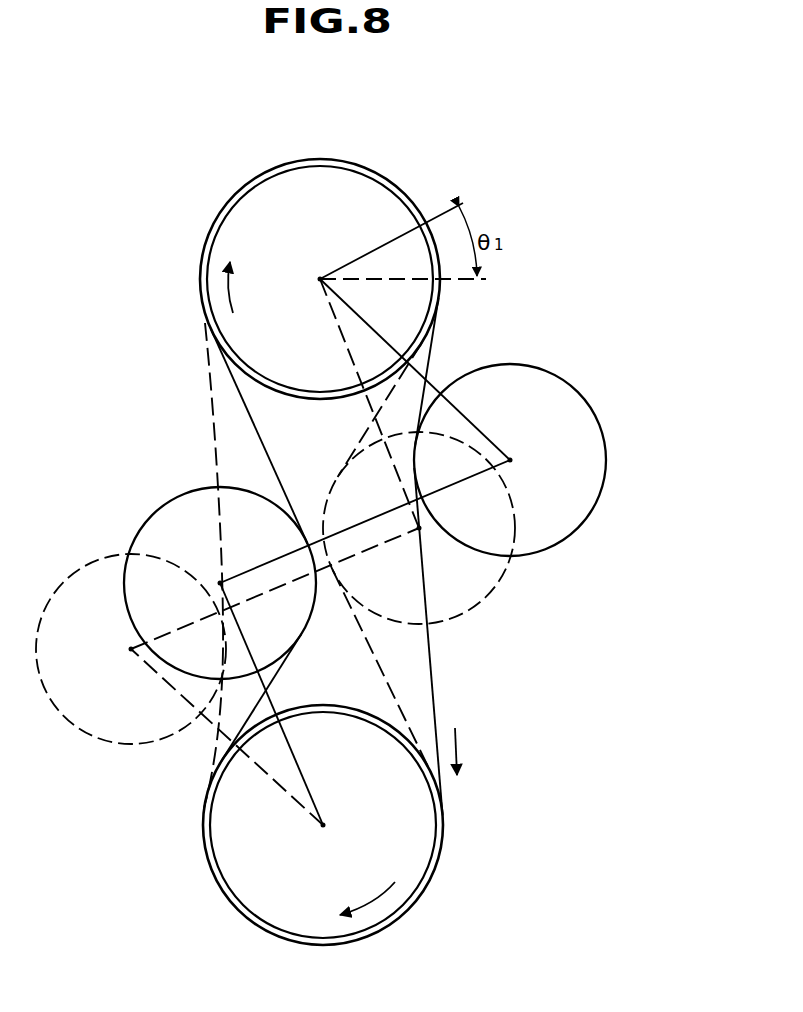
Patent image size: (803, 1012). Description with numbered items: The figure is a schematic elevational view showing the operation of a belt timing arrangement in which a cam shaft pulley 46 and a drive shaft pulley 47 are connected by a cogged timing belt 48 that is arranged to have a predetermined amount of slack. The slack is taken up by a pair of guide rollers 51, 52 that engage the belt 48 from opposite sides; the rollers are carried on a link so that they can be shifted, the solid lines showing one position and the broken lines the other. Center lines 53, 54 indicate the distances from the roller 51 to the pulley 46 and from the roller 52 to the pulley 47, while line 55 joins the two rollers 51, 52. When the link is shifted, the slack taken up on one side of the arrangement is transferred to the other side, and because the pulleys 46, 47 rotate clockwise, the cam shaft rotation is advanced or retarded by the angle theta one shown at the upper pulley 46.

The drive pulley 46 is at (388, 202).
The driven pulley 47 is at (418, 876).
The belt 48 is at (207, 412).
The first idler roller 51 is at (594, 506).
The second idler roller 52 is at (143, 532).
The center line between pulley 46 and idler 51 53 is at (431, 383).
The center line between pulley 47 and idler 52 54 is at (302, 774).
The center line between idlers 51 and 52 55 is at (381, 516).